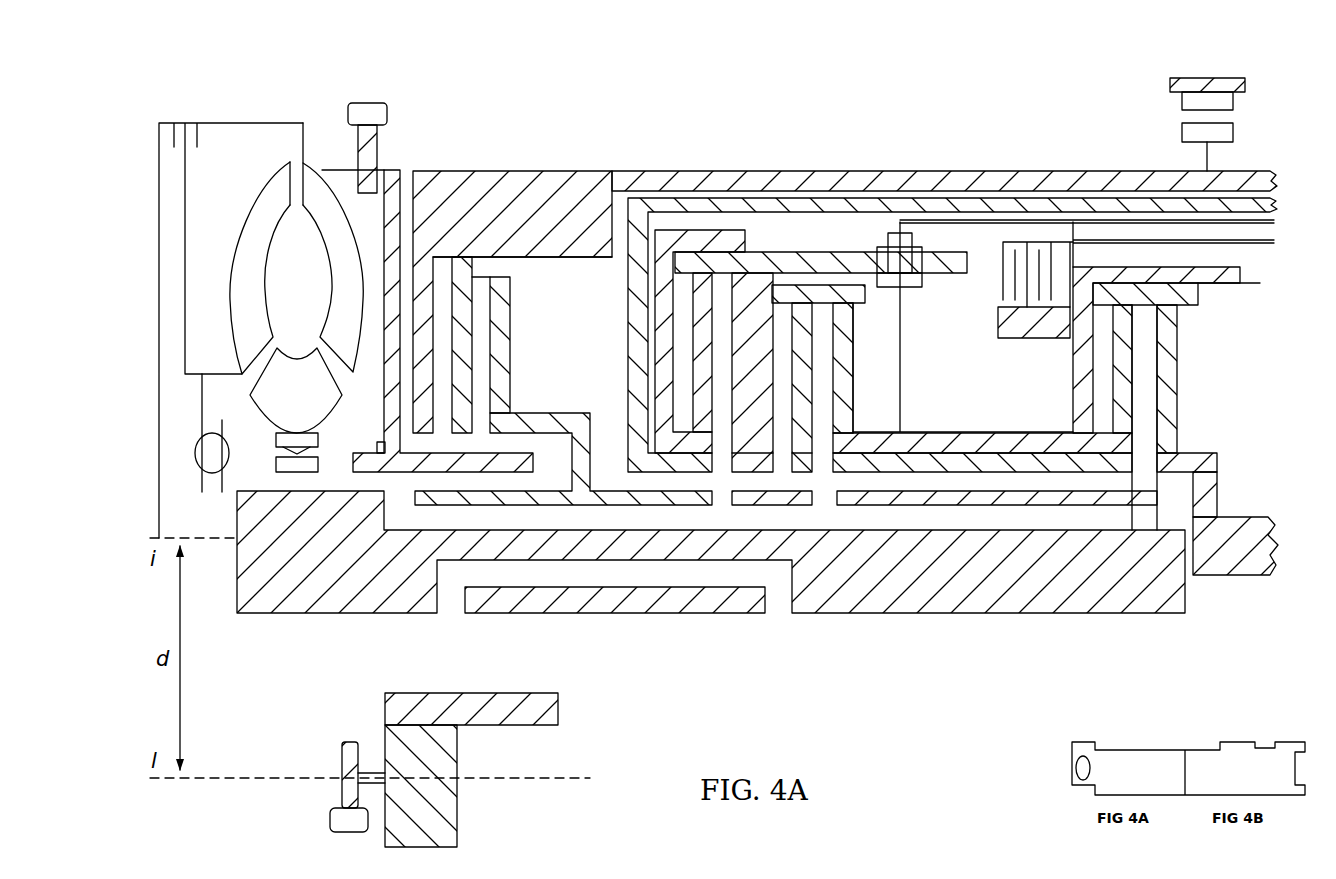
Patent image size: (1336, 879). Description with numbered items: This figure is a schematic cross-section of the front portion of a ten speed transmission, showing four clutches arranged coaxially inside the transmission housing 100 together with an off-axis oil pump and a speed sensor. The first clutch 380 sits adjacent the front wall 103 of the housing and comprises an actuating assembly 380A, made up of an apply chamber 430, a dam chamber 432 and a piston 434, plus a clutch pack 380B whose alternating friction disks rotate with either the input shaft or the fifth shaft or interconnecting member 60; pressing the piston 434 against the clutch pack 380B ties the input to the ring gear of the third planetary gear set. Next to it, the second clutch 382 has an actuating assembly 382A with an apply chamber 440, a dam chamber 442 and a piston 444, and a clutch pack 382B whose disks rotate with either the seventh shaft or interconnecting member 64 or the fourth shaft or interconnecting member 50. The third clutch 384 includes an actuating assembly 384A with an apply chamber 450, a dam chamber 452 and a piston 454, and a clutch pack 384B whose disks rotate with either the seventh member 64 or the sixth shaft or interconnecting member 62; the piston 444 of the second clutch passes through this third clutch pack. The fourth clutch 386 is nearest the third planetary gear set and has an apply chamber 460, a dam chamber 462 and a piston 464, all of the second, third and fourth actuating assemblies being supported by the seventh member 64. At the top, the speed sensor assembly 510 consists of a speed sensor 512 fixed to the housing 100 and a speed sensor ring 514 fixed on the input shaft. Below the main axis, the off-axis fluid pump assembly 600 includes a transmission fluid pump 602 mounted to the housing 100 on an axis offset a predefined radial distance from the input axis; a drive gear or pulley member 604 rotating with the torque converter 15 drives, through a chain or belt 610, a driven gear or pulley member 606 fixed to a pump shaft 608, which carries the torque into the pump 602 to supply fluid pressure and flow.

The torque converter 15 is at (286, 165).
The chain or belt 610 is at (362, 103).
The drive gear or pulley member 604 is at (358, 152).
The front wall 103 is at (393, 172).
The apply chamber 430 is at (447, 262).
The piston 434 is at (452, 430).
The dam chamber 432 is at (488, 412).
The apply chamber 440 is at (693, 440).
The dam chamber 442 is at (718, 447).
The first clutch 380 is at (568, 168).
The actuating assembly 380A is at (527, 297).
The clutch pack 380B is at (610, 294).
The piston 444 is at (684, 266).
The actuating assembly 382A is at (772, 226).
The second clutch 382 is at (709, 168).
The piston 454 is at (787, 316).
The dam chamber 452 is at (832, 417).
The apply chamber 450 is at (817, 420).
The third clutch 384 is at (848, 168).
The seventh shaft or interconnecting member 64 is at (978, 431).
The actuating assembly 384A is at (860, 381).
The clutch pack 384B is at (913, 240).
The clutch pack 382B is at (998, 262).
The fourth clutch 386 is at (1078, 168).
The piston 464 is at (1108, 297).
The apply chamber 460 is at (1113, 402).
The dam chamber 462 is at (1153, 364).
The fifth shaft or interconnecting member 60 is at (1246, 216).
The sixth shaft or interconnecting member 62 is at (1250, 222).
The fourth shaft or interconnecting member 50 is at (1243, 245).
The speed sensor assembly 510 is at (1249, 92).
The speed sensor 512 is at (1182, 102).
The speed sensor ring 514 is at (1182, 134).
The transmission housing 100 is at (1170, 83).
The transmission fluid pump 602 is at (458, 824).
The off-axis fluid pump assembly 600 is at (480, 829).
The driven gear or pulley member 606 is at (337, 793).
The pump shaft 608 is at (367, 770).